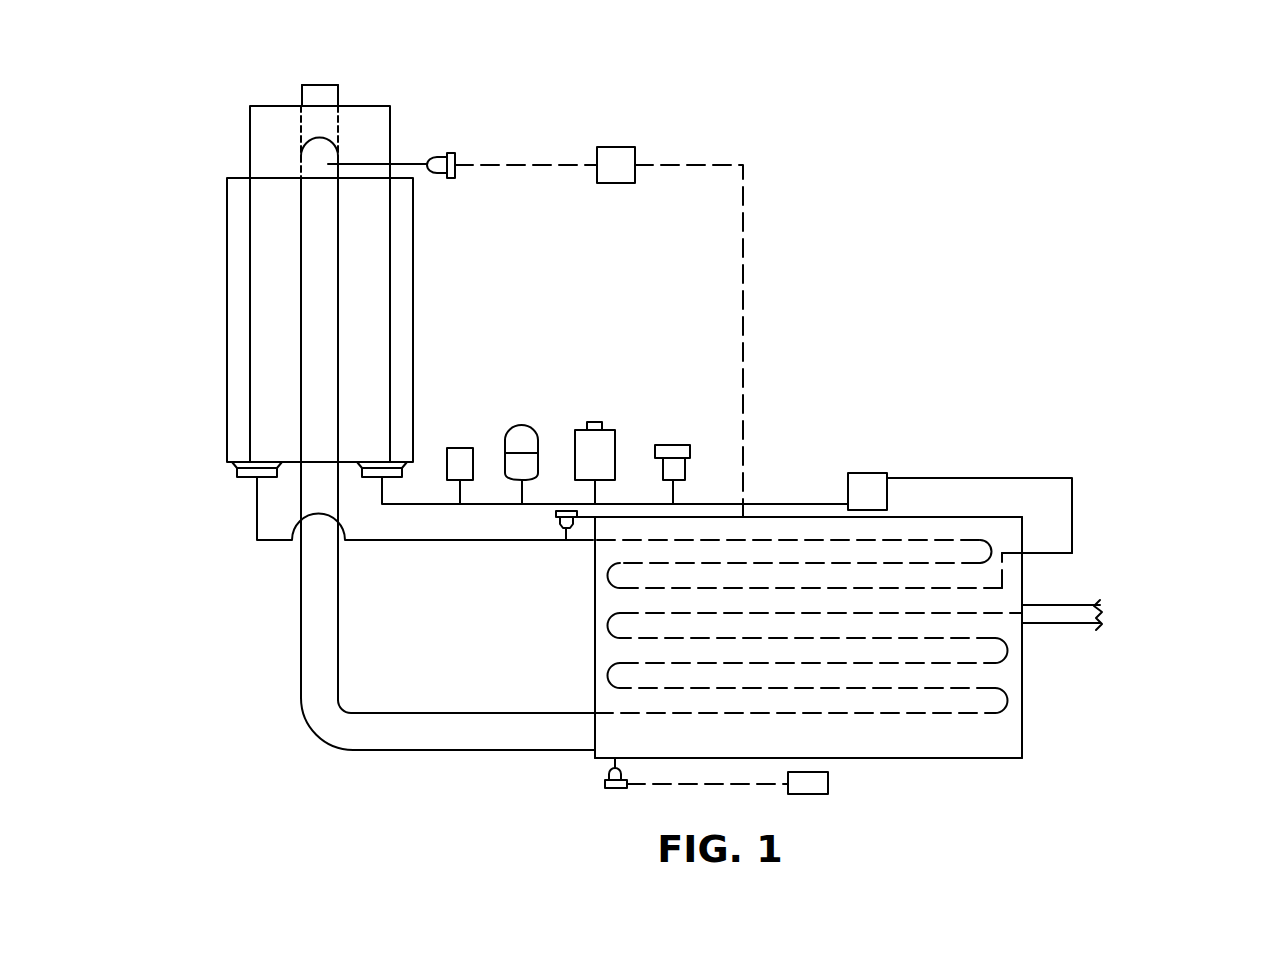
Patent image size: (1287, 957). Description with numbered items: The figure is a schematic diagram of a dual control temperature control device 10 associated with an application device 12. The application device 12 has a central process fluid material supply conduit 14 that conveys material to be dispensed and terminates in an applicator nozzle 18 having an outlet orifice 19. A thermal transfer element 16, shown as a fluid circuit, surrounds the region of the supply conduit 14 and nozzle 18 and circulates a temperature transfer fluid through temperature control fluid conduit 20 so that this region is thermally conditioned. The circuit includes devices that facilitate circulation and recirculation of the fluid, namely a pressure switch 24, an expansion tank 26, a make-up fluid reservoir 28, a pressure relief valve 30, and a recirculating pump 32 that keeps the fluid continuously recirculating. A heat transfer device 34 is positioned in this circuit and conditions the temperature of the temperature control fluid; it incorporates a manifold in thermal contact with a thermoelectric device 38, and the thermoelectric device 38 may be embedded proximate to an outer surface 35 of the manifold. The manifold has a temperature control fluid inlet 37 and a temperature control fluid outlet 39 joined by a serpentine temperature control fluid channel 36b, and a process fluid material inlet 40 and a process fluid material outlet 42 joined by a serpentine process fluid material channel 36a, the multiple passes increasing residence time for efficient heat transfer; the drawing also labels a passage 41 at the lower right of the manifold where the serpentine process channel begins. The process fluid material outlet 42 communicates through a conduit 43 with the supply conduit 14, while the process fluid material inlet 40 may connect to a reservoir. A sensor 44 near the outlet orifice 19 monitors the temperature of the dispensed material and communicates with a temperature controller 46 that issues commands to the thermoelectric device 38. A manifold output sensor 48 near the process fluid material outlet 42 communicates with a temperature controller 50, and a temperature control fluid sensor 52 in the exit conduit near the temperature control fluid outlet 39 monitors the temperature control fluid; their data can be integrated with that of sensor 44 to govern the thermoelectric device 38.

The dual control temperature control device 10 is at (780, 319).
The application device 12 is at (222, 385).
The process fluid material supply conduit 14 is at (323, 242).
The thermal transfer element 16 is at (1040, 470).
The applicator nozzle 18 is at (330, 95).
The outlet orifice 19 is at (328, 85).
The temperature control fluid conduit 20 is at (282, 318).
The pressure switch 24 is at (460, 448).
The expansion tank 26 is at (522, 440).
The make-up fluid reservoir 28 is at (600, 438).
The pressure relief valve 30 is at (673, 452).
The recirculating pump 32 is at (868, 487).
The heat transfer device 34 is at (1010, 766).
The outer surface 35 is at (778, 752).
The serpentine process fluid material channel 36a is at (1000, 660).
The temperature control fluid conveying channel 36b is at (980, 547).
The temperature control fluid inlet 37 is at (1023, 553).
The thermoelectric device 38 is at (588, 632).
The temperature control fluid outlet 39 is at (593, 540).
The process fluid material inlet 40 is at (1023, 613).
The coil inlet 41 is at (1000, 710).
The process fluid material outlet 42 is at (593, 713).
The conduit 43 is at (433, 750).
The sensor 44 is at (449, 153).
The temperature controller 46 is at (617, 157).
The manifold output sensor 48 is at (605, 776).
The temperature controller 50 is at (828, 782).
The temperature control fluid sensor 52 is at (562, 525).